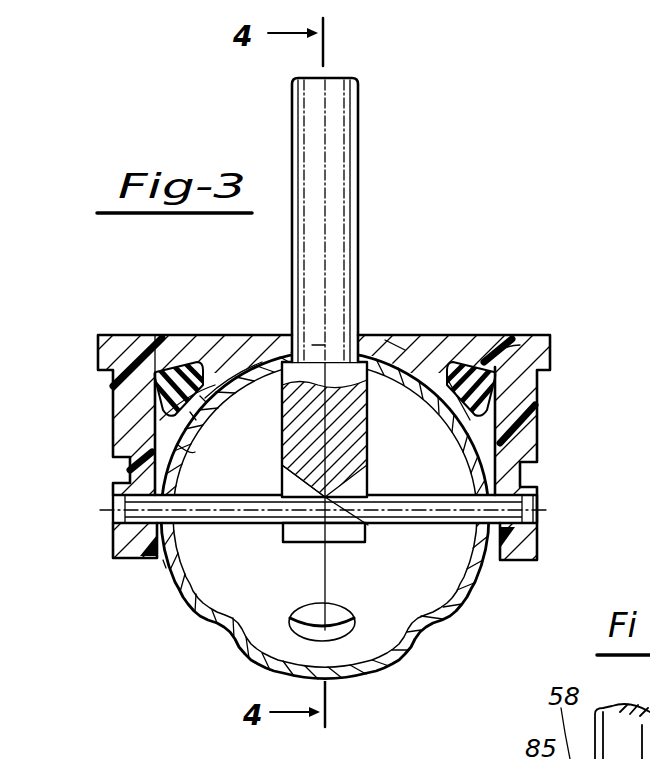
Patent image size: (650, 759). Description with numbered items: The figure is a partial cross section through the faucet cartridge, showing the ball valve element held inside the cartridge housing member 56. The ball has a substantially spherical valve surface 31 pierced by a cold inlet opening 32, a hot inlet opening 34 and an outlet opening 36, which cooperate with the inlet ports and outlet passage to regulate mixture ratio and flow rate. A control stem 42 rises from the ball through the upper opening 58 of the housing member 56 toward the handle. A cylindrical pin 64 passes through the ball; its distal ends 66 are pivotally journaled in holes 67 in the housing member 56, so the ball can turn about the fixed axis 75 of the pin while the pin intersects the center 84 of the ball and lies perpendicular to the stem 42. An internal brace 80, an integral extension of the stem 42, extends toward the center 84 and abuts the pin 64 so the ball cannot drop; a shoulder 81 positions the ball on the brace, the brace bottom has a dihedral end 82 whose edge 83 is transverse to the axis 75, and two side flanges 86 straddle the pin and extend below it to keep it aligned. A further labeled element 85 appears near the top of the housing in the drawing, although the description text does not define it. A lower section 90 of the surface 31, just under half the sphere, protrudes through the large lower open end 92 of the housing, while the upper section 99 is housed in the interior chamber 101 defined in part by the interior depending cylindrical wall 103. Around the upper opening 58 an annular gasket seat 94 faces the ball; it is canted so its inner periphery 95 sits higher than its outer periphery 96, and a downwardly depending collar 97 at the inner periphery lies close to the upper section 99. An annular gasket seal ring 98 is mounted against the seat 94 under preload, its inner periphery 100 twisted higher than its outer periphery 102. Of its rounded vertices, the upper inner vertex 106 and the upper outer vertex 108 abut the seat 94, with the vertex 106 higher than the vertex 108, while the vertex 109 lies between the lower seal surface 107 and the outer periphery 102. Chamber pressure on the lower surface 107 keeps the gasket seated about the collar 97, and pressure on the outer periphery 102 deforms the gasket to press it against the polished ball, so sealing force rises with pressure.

The spherical valve surface 31 is at (192, 612).
The cold inlet opening 32 is at (400, 648).
The hot inlet opening 34 is at (230, 641).
The outlet opening 36 is at (332, 632).
The control stem 42 is at (340, 131).
The cartridge housing member 56 is at (130, 400).
The upper opening 58 is at (265, 362).
The pin 64 is at (182, 525).
The distal ends 66 is at (127, 537).
The holes 67 is at (115, 522).
The fixed axis 75 is at (113, 510).
The internal brace 80 is at (367, 376).
The shoulder 81 is at (318, 352).
The dihedral end 82 is at (333, 480).
The edge 83 is at (366, 528).
The center of ball valve 84 is at (285, 536).
The body shoulder 85 is at (395, 345).
The side flanges 86 is at (296, 485).
The lower section 90 is at (182, 602).
The lower open end 92 is at (160, 566).
The annular gasket seat 94 is at (175, 370).
The inner periphery of gasket seat 95 is at (195, 372).
The outer periphery of gasket seat 96 is at (508, 347).
The collar 97 is at (462, 362).
The annular gasket seal ring 98 is at (552, 378).
The upper section of ball element 99 is at (508, 420).
The inner periphery of gasket seal ring 100 is at (452, 372).
The interior chamber 101 is at (150, 432).
The outer periphery of gasket seal ring 102 is at (195, 418).
The interior depending cylindrical wall 103 is at (537, 448).
The upper inner diameter vertex 106 is at (217, 370).
The lower seal surface 107 is at (205, 400).
The upper outer diameter vertex 108 is at (130, 380).
The vertex 109 is at (195, 450).